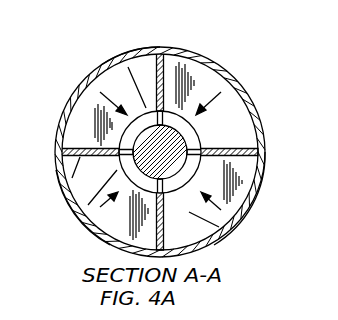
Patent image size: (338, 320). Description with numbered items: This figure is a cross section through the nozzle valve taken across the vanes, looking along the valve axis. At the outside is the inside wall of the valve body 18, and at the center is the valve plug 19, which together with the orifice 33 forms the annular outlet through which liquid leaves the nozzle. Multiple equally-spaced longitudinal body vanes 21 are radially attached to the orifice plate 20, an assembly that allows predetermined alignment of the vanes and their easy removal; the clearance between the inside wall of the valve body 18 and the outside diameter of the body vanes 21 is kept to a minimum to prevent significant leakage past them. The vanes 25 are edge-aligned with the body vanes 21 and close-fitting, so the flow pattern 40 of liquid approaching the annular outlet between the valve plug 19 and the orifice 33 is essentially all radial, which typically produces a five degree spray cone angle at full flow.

The valve body 18 is at (78, 82).
The valve plug 19 is at (188, 140).
The orifice plate 20 is at (229, 230).
The body vanes 21 is at (60, 197).
The vanes 25 is at (73, 222).
The orifice 33 is at (120, 47).
The flow pattern 40 is at (213, 92).